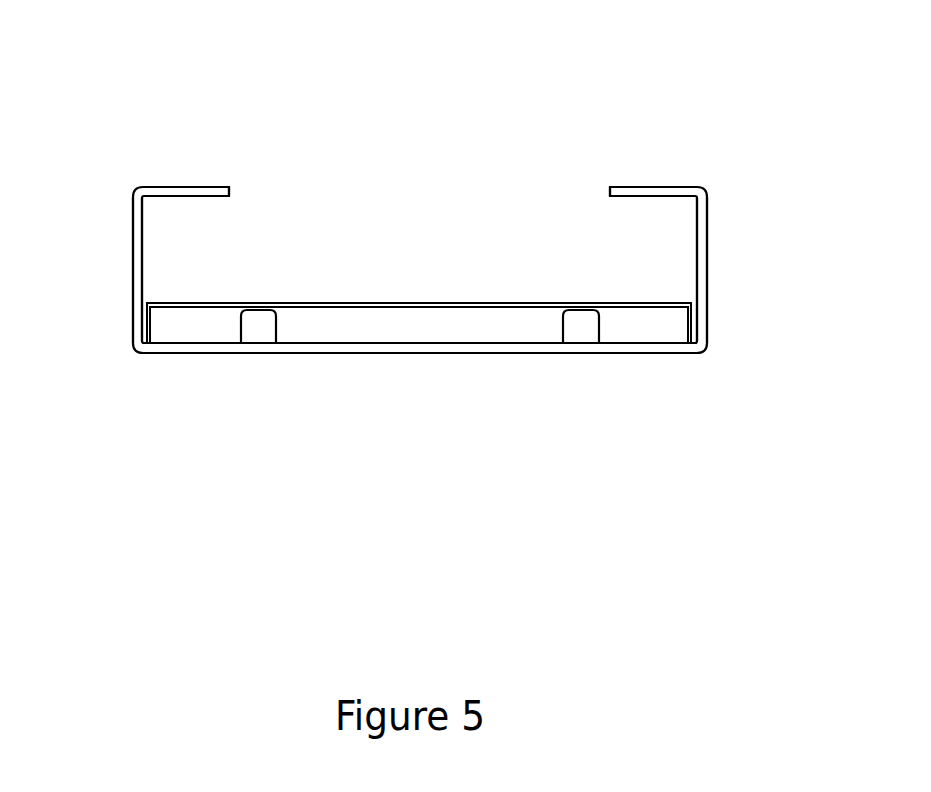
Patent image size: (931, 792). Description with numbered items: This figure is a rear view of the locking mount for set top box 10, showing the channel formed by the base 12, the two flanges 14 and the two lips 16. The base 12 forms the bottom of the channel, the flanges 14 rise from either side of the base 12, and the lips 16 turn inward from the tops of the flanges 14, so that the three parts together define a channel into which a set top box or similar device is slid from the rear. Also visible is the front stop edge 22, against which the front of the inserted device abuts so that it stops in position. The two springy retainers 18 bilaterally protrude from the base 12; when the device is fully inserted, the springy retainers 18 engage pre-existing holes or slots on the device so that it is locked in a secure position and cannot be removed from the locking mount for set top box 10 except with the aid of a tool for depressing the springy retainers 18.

The locking mount for set top box 10 is at (737, 177).
The base 12 is at (405, 353).
The flanges 14 is at (132, 263).
The lips 16 is at (193, 184).
The springy retainers 18 is at (255, 332).
The front stop edge 22 is at (447, 318).